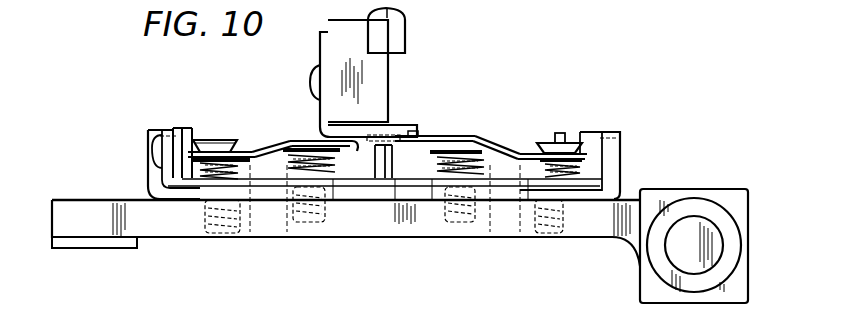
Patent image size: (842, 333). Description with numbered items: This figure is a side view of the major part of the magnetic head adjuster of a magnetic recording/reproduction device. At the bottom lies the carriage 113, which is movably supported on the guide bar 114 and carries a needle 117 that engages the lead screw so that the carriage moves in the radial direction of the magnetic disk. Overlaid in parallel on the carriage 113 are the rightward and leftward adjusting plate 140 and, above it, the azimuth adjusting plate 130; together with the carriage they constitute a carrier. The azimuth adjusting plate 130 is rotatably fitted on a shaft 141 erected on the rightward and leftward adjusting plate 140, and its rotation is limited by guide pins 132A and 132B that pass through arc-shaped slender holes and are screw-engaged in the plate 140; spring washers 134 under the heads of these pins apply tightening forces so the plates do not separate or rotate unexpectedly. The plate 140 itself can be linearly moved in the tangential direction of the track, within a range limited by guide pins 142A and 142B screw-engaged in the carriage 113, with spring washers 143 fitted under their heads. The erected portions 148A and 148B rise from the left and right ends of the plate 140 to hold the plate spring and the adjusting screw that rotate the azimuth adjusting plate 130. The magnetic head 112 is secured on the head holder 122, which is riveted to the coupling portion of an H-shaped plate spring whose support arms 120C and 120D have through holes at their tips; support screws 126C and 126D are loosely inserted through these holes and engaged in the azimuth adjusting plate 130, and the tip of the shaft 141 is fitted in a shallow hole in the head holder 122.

The magnetic head 112 is at (405, 10).
The carriage 113 is at (723, 195).
The guide bar 114 is at (680, 222).
The needle 117 is at (125, 248).
The support arm 120C is at (500, 143).
The support arm 120D is at (267, 152).
The head holder 122 is at (320, 54).
The support screw 126C is at (572, 142).
The support screw 126D is at (198, 138).
The azimuth adjusting plate 130 is at (353, 183).
The guide pin 132A is at (293, 139).
The guide pin 132B is at (453, 138).
The spring washer 134 is at (280, 167).
The rightward and leftward adjusting plate 140 is at (420, 198).
The shaft 141 is at (395, 160).
The guide pin 142A is at (240, 140).
The guide pin 142B is at (532, 148).
The spring washer 143 is at (248, 198).
The erected portion 148A is at (165, 157).
The erected portion 148B is at (612, 133).